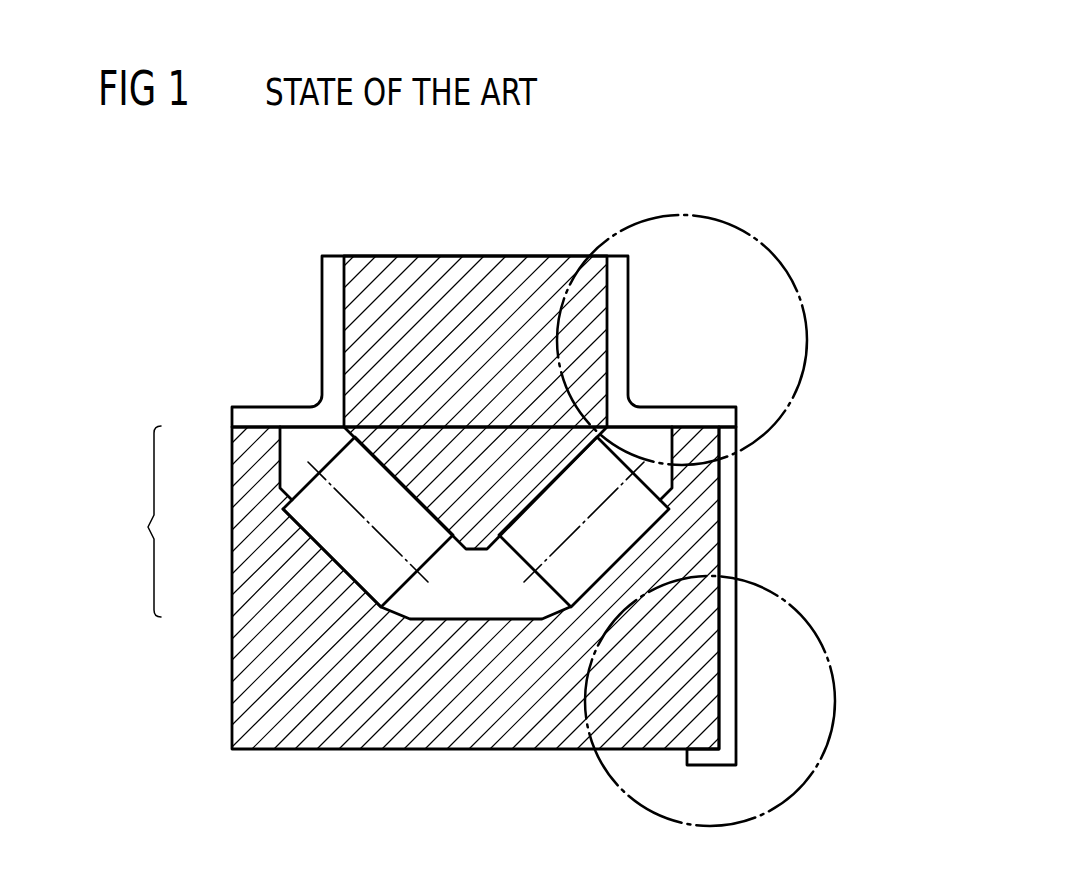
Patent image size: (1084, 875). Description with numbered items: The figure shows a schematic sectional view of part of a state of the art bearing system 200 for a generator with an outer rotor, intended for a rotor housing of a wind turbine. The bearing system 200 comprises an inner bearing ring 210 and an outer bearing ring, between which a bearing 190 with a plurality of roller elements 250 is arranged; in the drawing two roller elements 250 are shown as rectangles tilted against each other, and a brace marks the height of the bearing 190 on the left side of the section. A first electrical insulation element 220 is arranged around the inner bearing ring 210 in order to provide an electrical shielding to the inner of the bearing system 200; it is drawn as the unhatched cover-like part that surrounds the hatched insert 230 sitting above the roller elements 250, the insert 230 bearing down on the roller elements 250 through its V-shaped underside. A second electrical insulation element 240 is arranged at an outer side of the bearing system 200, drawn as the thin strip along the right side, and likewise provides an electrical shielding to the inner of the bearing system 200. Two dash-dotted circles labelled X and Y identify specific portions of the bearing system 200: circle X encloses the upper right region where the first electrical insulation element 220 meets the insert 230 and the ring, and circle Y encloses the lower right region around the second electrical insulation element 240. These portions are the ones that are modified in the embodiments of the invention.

The bearing system 200 is at (786, 175).
The inner bearing ring 210 is at (523, 742).
The first electrical insulation element 220 is at (668, 413).
The clamping insert 230 is at (467, 253).
The second electrical insulation element 240 is at (728, 693).
The roller elements 250 is at (310, 528).
The bearing 190 is at (130, 521).
The circle X is at (807, 335).
The circle Y is at (834, 700).